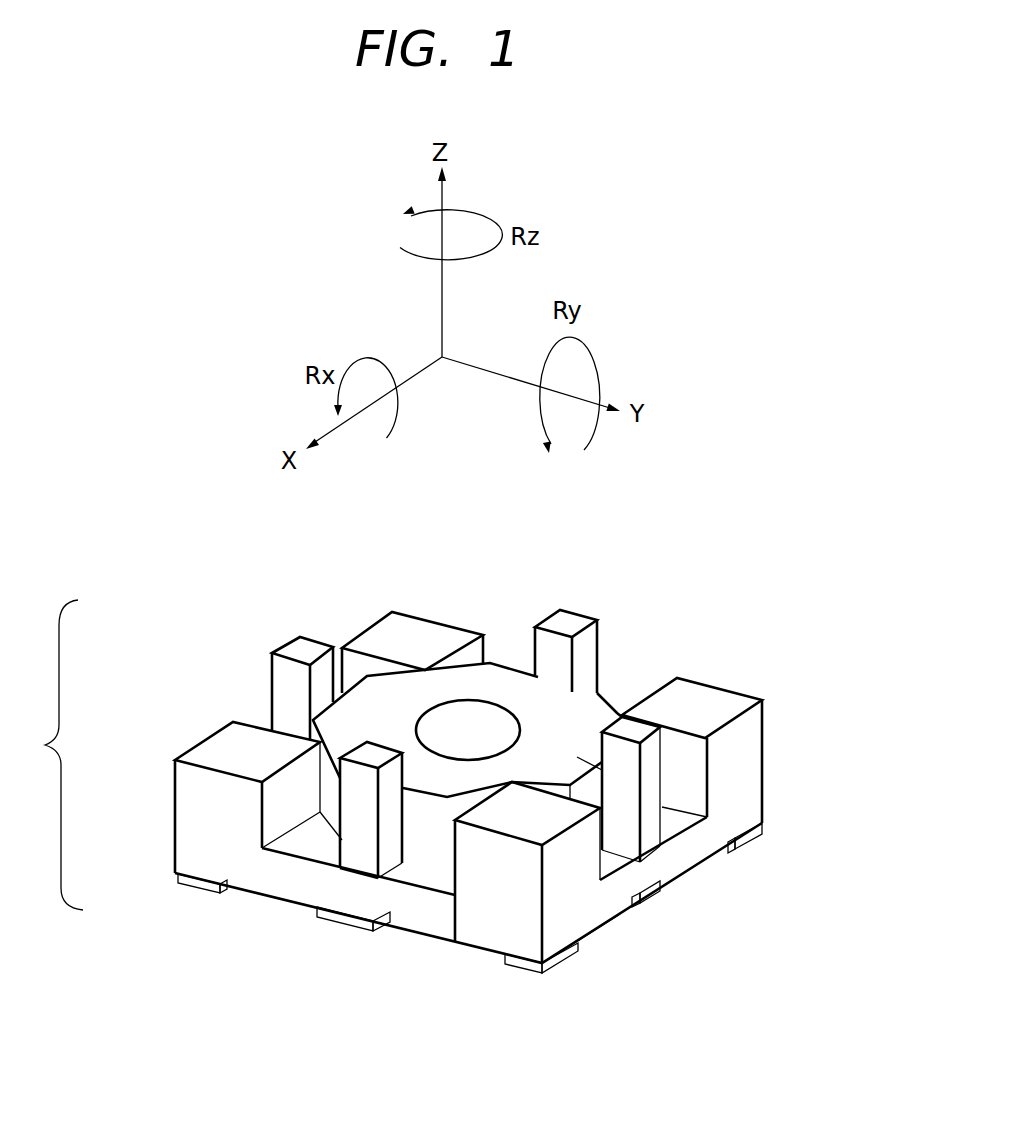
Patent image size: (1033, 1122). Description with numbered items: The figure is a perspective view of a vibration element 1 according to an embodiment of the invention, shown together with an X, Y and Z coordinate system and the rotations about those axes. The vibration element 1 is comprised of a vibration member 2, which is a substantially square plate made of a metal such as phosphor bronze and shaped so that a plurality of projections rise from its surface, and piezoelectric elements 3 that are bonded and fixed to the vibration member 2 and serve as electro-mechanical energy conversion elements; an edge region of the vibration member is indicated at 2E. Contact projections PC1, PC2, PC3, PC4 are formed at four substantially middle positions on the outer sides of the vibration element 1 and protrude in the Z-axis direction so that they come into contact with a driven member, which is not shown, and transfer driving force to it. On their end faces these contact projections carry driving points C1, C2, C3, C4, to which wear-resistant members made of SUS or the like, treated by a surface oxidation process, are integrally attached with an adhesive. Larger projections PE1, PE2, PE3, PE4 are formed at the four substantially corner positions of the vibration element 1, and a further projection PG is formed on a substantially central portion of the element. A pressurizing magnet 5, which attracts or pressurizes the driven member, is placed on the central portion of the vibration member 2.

The vibration element 1 is at (52, 755).
The vibration member 2 is at (750, 790).
The edge of base plate 2E is at (607, 907).
The piezoelectric elements 3 is at (198, 892).
The pressurizing magnet 5 is at (500, 720).
The projection PE1 is at (478, 922).
The projection PE2 is at (710, 692).
The projection PE3 is at (375, 628).
The projection PE4 is at (185, 812).
The contact projection PC1 is at (363, 853).
The contact projection PC2 is at (648, 832).
The contact projection PC3 is at (592, 633).
The contact projection PC4 is at (282, 692).
The driving point C1 is at (367, 757).
The driving point C2 is at (640, 727).
The driving point C3 is at (557, 618).
The driving point C4 is at (288, 648).
The projection PG is at (577, 757).